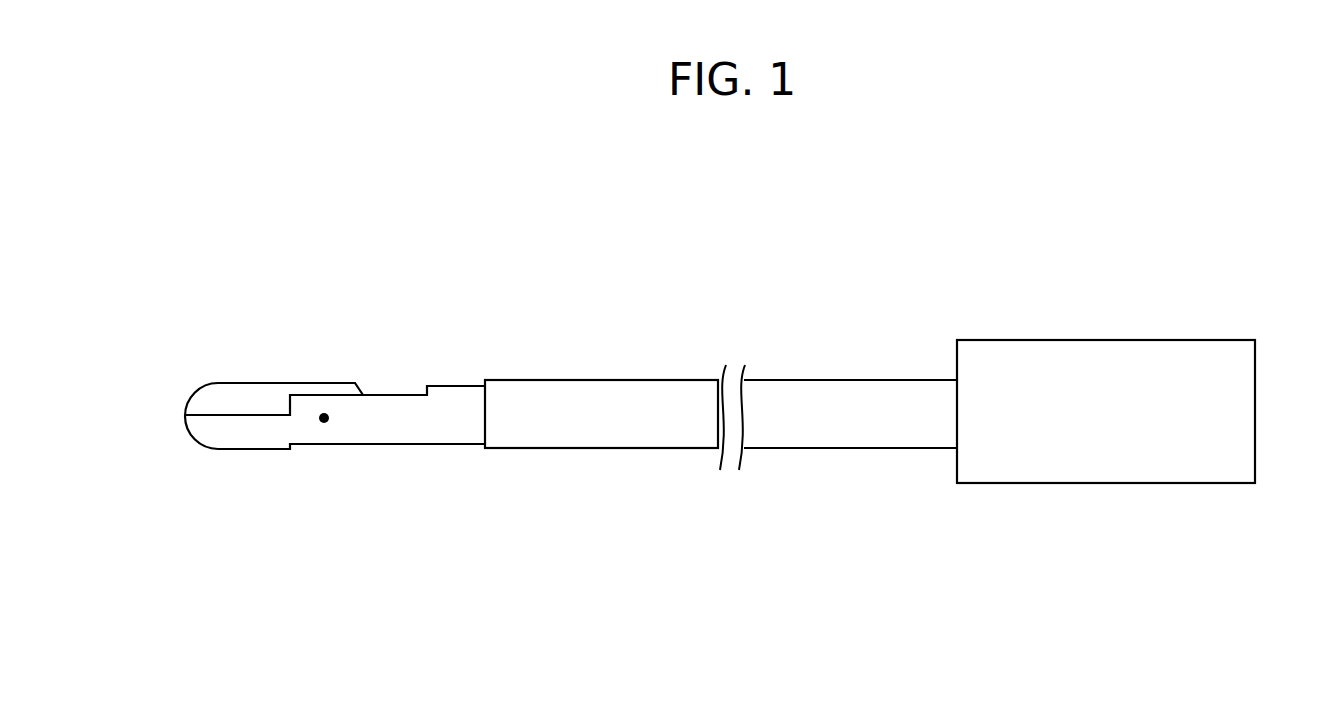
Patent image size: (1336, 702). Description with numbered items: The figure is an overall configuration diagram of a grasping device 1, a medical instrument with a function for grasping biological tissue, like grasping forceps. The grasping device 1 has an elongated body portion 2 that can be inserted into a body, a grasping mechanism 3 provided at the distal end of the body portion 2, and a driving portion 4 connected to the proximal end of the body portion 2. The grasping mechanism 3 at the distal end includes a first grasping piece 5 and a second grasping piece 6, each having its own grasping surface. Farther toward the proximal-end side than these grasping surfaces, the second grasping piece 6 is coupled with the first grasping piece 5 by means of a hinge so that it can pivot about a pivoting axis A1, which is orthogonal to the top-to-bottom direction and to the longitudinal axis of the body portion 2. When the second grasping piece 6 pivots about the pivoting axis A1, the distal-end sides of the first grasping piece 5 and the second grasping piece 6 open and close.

The grasping device 1 is at (316, 196).
The body portion 2 is at (582, 448).
The grasping mechanism 3 is at (188, 480).
The driving portion 4 is at (1104, 340).
The first grasping piece 5 is at (263, 452).
The second grasping piece 6 is at (248, 382).
The pivoting axis A1 is at (324, 412).